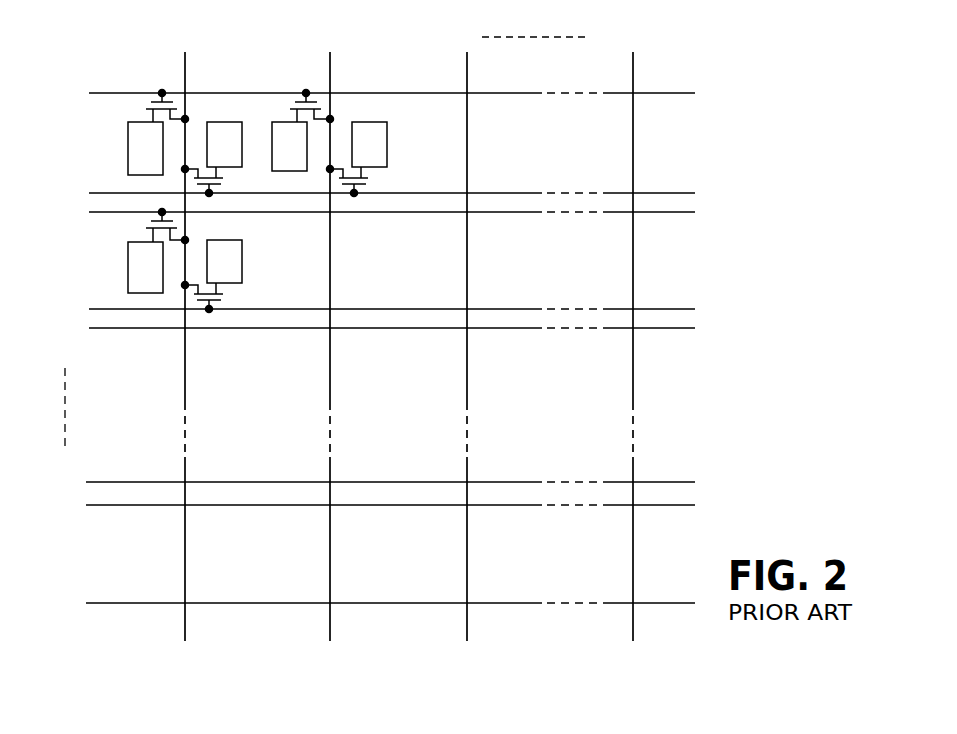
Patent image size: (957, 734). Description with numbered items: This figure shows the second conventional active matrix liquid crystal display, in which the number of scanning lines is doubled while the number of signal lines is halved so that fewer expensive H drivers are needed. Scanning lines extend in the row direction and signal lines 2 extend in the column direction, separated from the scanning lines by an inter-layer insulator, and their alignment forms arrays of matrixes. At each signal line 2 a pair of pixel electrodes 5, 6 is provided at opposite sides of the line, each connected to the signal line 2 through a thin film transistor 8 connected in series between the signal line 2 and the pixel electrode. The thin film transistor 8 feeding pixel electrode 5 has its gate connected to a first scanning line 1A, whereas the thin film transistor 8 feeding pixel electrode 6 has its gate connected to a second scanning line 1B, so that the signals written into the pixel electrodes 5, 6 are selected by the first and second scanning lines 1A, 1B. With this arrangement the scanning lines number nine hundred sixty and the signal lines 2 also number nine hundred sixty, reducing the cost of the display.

The first scanning line 1A is at (510, 538).
The second scanning line 1B is at (558, 575).
The signal line 2 is at (677, 70).
The pixel electrode 5 is at (277, 133).
The pixel electrode 6 is at (368, 138).
The thin film transistor 8 is at (402, 250).